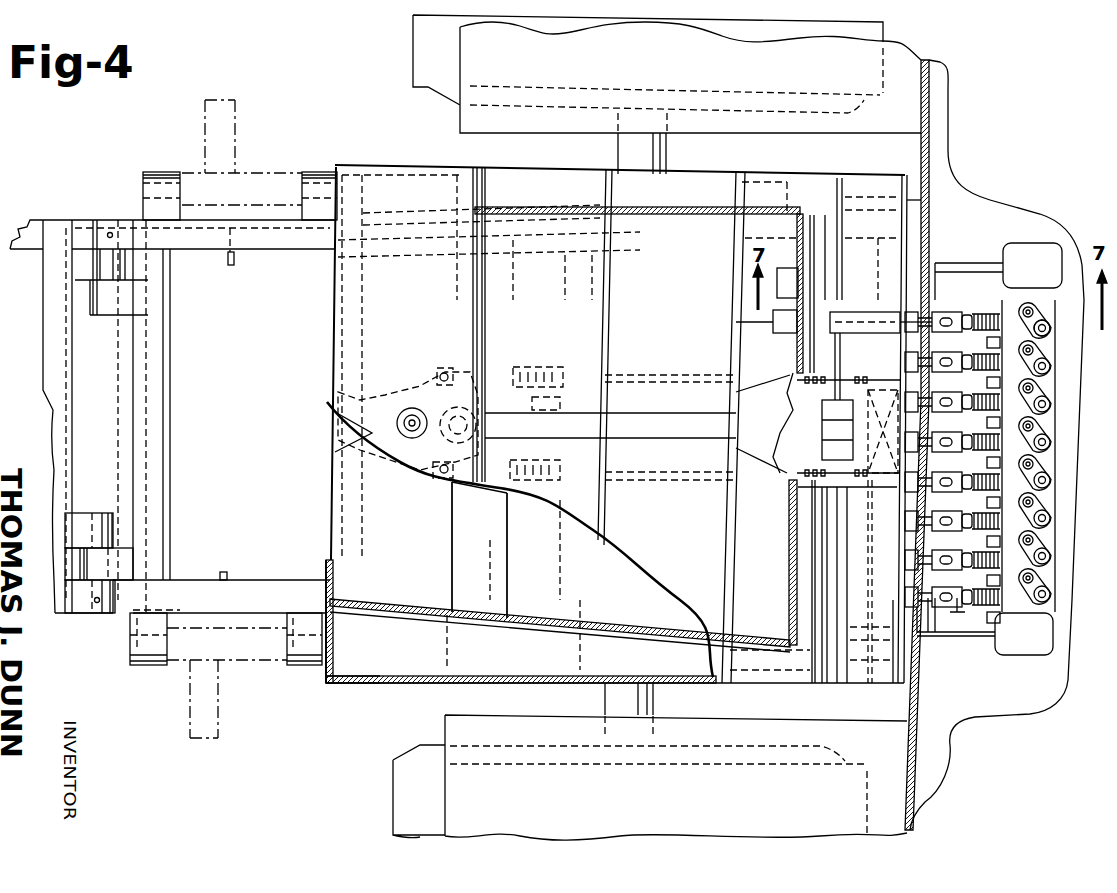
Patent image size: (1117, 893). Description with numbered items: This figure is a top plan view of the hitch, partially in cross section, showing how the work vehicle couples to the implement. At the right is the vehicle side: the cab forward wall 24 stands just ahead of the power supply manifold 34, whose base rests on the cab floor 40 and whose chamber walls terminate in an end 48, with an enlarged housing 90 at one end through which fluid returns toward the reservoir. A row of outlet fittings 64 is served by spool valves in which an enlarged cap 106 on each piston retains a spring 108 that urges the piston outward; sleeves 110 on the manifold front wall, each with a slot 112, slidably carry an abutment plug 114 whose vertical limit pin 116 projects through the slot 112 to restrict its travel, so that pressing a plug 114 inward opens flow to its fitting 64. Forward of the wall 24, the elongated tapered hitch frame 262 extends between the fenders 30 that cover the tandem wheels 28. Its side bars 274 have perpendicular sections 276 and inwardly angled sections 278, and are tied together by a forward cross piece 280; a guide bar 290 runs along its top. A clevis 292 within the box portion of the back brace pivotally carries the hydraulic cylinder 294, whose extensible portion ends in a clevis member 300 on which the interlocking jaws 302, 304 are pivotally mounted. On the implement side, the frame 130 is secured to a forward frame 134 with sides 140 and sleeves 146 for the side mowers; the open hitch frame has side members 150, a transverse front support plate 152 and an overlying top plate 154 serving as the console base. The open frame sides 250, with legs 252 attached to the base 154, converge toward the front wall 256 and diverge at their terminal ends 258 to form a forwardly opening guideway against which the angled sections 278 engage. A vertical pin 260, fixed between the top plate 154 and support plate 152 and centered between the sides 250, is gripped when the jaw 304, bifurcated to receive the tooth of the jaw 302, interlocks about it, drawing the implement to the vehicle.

The forward wall 24 is at (925, 710).
The tandem wheels 28 is at (400, 802).
The fenders 30 is at (483, 796).
The power supply manifold 34 is at (1070, 581).
The cab floor 40 is at (1010, 697).
The end 48 is at (1033, 660).
The outlet fitting 64 is at (1047, 335).
The enlarged housing 90 is at (1045, 273).
The enlarged cap 106 is at (978, 310).
The spring 108 is at (969, 281).
The sleeve 110 is at (930, 610).
The slot 112 is at (932, 322).
The abutment plug 114 is at (957, 610).
The vertical limit pin 116 is at (952, 325).
The frame 130 is at (88, 626).
The forward frame 134 is at (210, 266).
The sides 140 is at (270, 220).
The sleeves 146 is at (307, 667).
The side members 150 is at (377, 680).
The transverse front support plate 152 is at (396, 531).
The top plate 154 is at (388, 170).
The sides 250 is at (383, 622).
The legs 252 is at (428, 630).
The front wall 256 is at (325, 565).
The terminal ends 258 is at (778, 665).
The vertical pin 260 is at (405, 427).
The tapered hitch frame 262 is at (448, 567).
The side bars 274 is at (753, 647).
The perpendicular sections 276 is at (807, 650).
The inwardly angled sections 278 is at (535, 632).
The forward cross piece 280 is at (452, 540).
The guide bar 290 is at (793, 440).
The clevis 292 is at (873, 480).
The hydraulic cylinder 294 is at (670, 447).
The clevis member 300 is at (420, 466).
The jaw 302 is at (377, 445).
The jaw 304 is at (330, 392).